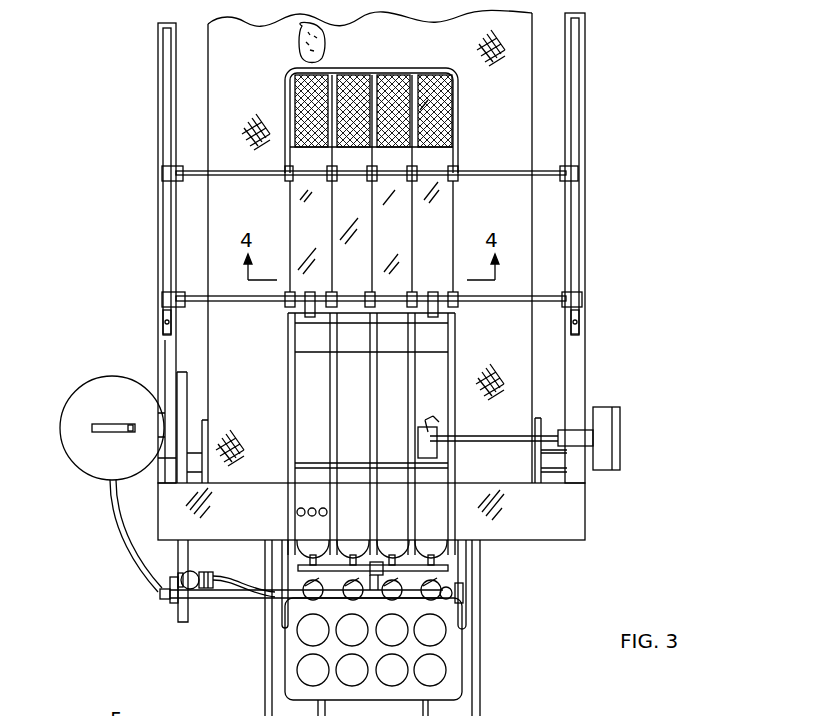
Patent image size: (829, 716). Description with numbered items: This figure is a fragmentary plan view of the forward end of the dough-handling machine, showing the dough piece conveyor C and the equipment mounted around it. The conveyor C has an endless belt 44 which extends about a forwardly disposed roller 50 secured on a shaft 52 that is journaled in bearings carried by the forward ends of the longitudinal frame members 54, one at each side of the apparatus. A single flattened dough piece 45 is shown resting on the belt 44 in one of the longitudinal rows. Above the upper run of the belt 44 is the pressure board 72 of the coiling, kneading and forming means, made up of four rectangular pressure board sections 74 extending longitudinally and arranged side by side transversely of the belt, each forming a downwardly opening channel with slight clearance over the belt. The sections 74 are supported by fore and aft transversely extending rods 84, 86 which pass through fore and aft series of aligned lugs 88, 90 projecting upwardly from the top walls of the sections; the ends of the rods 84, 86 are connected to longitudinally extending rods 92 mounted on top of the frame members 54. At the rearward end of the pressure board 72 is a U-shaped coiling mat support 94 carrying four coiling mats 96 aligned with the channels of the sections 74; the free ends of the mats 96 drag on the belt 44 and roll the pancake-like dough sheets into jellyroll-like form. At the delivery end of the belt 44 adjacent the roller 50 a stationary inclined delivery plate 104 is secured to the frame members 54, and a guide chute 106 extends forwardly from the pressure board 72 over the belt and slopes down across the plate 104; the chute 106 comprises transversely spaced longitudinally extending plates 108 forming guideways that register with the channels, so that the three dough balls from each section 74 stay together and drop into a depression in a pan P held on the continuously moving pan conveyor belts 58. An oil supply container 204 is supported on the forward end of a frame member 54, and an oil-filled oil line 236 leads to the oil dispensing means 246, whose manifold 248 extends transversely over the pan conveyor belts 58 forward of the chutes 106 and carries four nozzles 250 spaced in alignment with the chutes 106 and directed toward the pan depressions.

The dough piece conveyor C is at (204, 43).
The endless belt 44 is at (222, 108).
The flattened dough piece 45 is at (340, 46).
The forwardly disposed roller 50 is at (543, 475).
The shaft 52 is at (555, 455).
The longitudinal frame members 54 is at (158, 358).
The pan conveyor belts 58 is at (280, 675).
The pressure board 72 is at (288, 225).
The pressure board sections 74 is at (376, 183).
The aft transversely extending rod 84 is at (500, 300).
The fore transversely extending rod 86 is at (487, 172).
The lugs 88 is at (335, 295).
The lugs 90 is at (338, 178).
The longitudinally extending rods 92 is at (160, 152).
The coiling mat support 94 is at (290, 90).
The coiling mats 96 is at (373, 111).
The inclined delivery plate 104 is at (555, 520).
The guide chute 106 is at (288, 446).
The longitudinally extending plates 108 is at (370, 446).
The oil supply container 204 is at (105, 381).
The oil line 236 is at (122, 530).
The oil dispensing means 246 is at (232, 598).
The manifold 248 is at (243, 600).
The nozzles 250 is at (290, 536).
The pan P is at (465, 677).